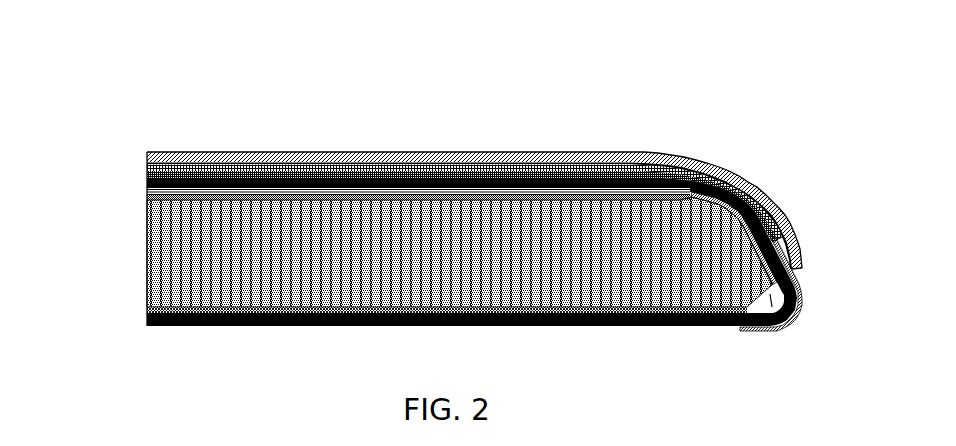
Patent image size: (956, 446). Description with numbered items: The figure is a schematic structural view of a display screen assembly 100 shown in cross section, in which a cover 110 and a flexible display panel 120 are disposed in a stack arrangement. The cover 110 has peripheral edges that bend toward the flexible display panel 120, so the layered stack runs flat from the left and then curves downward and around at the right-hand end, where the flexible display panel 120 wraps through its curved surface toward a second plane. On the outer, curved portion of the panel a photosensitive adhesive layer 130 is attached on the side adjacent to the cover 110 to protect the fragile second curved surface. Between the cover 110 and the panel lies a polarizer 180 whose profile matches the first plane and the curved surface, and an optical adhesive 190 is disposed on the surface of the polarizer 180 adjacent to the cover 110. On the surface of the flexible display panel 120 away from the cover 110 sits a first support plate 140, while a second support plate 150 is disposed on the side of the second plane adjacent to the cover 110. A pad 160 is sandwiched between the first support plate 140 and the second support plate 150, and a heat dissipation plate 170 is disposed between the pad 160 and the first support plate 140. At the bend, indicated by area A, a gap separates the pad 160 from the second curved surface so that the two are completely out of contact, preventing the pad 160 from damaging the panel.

The display screen assembly 100 is at (118, 60).
The cover 110 is at (716, 165).
The flexible display panel 120 is at (148, 183).
The photosensitive adhesive layer 130 is at (797, 272).
The first support plate 140 is at (148, 192).
The second support plate 150 is at (148, 310).
The pad 160 is at (165, 265).
The heat dissipation plate 170 is at (148, 197).
The polarizer 180 is at (777, 234).
The optical adhesive 190 is at (764, 207).
The area A is at (788, 323).